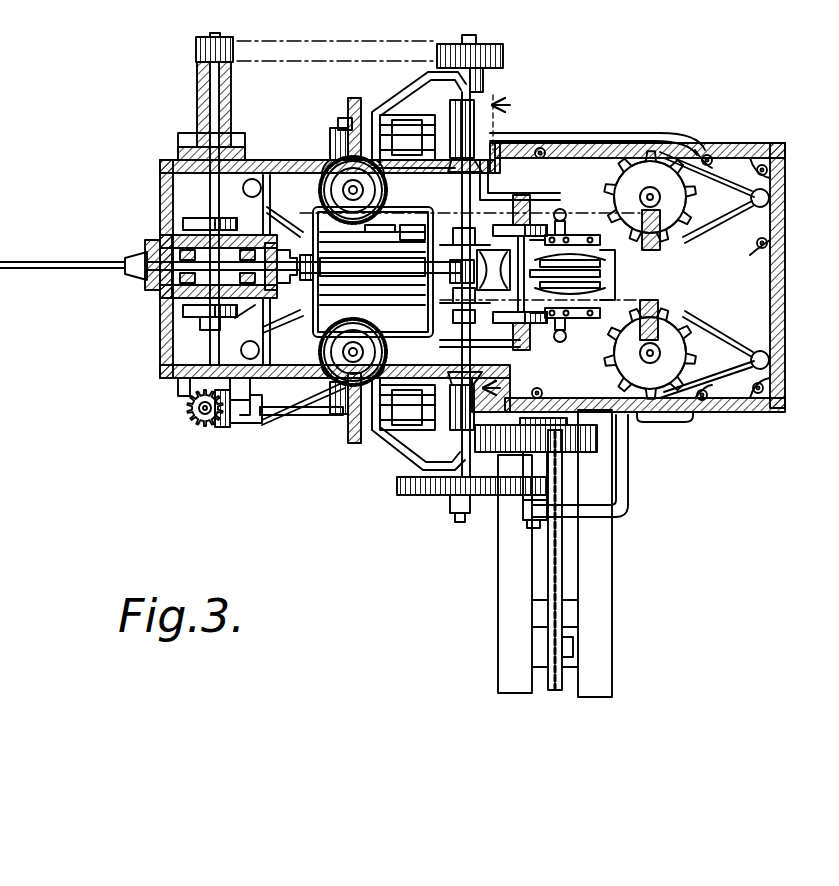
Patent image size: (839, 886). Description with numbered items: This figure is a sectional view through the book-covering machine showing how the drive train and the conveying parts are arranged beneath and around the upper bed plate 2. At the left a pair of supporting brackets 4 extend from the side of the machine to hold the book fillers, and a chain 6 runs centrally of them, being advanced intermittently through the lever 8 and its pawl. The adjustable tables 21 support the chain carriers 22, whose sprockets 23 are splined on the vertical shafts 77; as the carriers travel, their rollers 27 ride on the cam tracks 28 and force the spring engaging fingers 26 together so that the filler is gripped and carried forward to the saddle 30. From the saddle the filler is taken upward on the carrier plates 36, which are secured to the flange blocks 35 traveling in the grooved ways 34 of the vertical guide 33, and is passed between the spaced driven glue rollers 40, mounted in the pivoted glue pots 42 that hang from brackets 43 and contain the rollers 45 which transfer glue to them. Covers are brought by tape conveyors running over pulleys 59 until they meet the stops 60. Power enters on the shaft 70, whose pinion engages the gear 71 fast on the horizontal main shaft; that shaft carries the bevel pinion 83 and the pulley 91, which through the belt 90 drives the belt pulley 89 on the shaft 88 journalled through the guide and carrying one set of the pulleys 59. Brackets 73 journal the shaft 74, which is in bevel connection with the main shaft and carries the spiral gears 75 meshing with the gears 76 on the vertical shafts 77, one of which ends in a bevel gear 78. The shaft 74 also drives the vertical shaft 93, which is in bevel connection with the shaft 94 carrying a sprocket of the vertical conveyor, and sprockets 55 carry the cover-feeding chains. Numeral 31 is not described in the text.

The upper bed plate 2 is at (786, 150).
The adjustable tables 21 is at (660, 135).
The belt pulley 89 is at (235, 40).
The belt 90 is at (335, 41).
The pulley 91 is at (503, 52).
The lever 8 is at (493, 243).
The brackets 73 is at (418, 72).
The shaft 74 is at (410, 125).
The spiral gears 75 is at (355, 100).
The vertical shafts 77 is at (320, 192).
The gears 76 is at (345, 185).
The glue pots 42 is at (325, 200).
The sprockets 23 is at (696, 190).
The sprockets 55 is at (700, 240).
The carrier plates 36 is at (82, 262).
The flange blocks 35 is at (143, 255).
The vertical guide 33 is at (170, 300).
The grooved ways 34 is at (153, 240).
The pulleys 59 is at (205, 218).
The shaft 88 is at (210, 330).
The brackets 43 is at (255, 305).
The cam tracks 28 is at (530, 210).
The saddle 30 is at (350, 275).
The armature 31 is at (360, 240).
The rollers 45 is at (375, 225).
The glue rollers 40 is at (420, 240).
The bevel pinion 83 is at (475, 300).
The spring engaging fingers 26 is at (585, 292).
The rollers 27 is at (582, 235).
The chain carriers 22 is at (600, 238).
The vertical shaft 93 is at (195, 425).
The shaft 94 is at (225, 428).
The gear 71 is at (420, 495).
The bevel gear 78 is at (462, 522).
The stops 60 is at (590, 458).
The shaft 70 is at (530, 528).
The supporting brackets 4 is at (505, 634).
The chain 6 is at (565, 575).